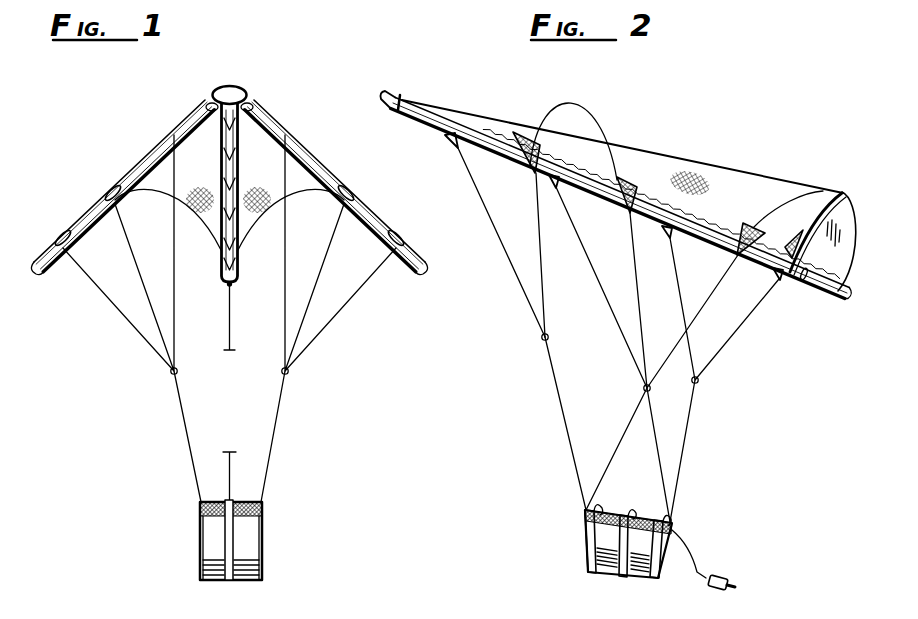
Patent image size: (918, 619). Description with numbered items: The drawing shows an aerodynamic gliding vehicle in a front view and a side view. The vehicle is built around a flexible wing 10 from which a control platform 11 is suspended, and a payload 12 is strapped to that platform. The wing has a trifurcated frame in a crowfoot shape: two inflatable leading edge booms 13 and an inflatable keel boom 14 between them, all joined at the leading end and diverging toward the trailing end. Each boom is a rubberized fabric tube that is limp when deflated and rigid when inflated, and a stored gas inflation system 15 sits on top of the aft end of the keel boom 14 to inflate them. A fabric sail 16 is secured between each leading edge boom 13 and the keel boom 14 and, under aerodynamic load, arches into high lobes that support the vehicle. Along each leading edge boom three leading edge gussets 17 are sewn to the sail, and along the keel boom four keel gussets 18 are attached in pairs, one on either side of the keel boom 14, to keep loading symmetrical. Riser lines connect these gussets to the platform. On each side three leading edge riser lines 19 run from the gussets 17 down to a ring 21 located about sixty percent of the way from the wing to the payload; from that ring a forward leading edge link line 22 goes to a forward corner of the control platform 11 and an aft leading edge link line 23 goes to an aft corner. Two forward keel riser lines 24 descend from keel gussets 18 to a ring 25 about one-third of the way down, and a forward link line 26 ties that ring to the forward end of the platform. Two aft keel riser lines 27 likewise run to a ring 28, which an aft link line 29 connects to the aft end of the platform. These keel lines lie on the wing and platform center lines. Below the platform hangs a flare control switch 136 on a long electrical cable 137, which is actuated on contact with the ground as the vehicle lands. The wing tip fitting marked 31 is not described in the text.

In FIG. 1, the flexible wing 10 is at (329, 148).
In FIG. 2, the flexible wing 10 is at (648, 139).
In FIG. 1, the control platform 11 is at (200, 510).
In FIG. 2, the control platform 11 is at (672, 520).
In FIG. 1, the payload 12 is at (248, 543).
In FIG. 2, the payload 12 is at (655, 550).
In FIG. 1, the leading edge boom 13 is at (44, 278).
In FIG. 2, the leading edge boom 13 is at (410, 117).
In FIG. 1, the keel boom 14 is at (238, 272).
In FIG. 2, the keel boom 14 is at (820, 296).
In FIG. 2, the stored gas inflation system 15 is at (805, 228).
In FIG. 1, the fabric sail 16 is at (205, 180).
In FIG. 2, the fabric sail 16 is at (745, 207).
In FIG. 1, the leading edge gusset 17 is at (174, 146).
In FIG. 2, the leading edge gusset 17 is at (825, 188).
In FIG. 1, the keel gusset 18 is at (233, 165).
In FIG. 2, the keel gusset 18 is at (447, 146).
In FIG. 1, the leading edge riser line 19 is at (174, 238).
In FIG. 2, the leading edge riser line 19 is at (630, 250).
In FIG. 1, the ring 21 is at (177, 373).
In FIG. 2, the ring 21 is at (644, 388).
In FIG. 1, the forward leading edge link line 22 is at (182, 425).
In FIG. 2, the forward leading edge link line 22 is at (623, 427).
In FIG. 2, the aft leading edge link line 23 is at (657, 468).
In FIG. 1, the forward keel riser line 24 is at (222, 148).
In FIG. 2, the forward keel riser line 24 is at (542, 218).
In FIG. 2, the ring 25 is at (542, 338).
In FIG. 1, the forward link line 26 is at (233, 460).
In FIG. 2, the forward link line 26 is at (563, 417).
In FIG. 1, the aft keel riser line 27 is at (237, 245).
In FIG. 2, the aft keel riser line 27 is at (734, 323).
In FIG. 2, the ring 28 is at (698, 380).
In FIG. 2, the aft link line 29 is at (690, 413).
In FIG. 1, the nose knob 31 is at (236, 88).
In FIG. 2, the switch 136 is at (731, 581).
In FIG. 2, the electrical cable 137 is at (680, 563).